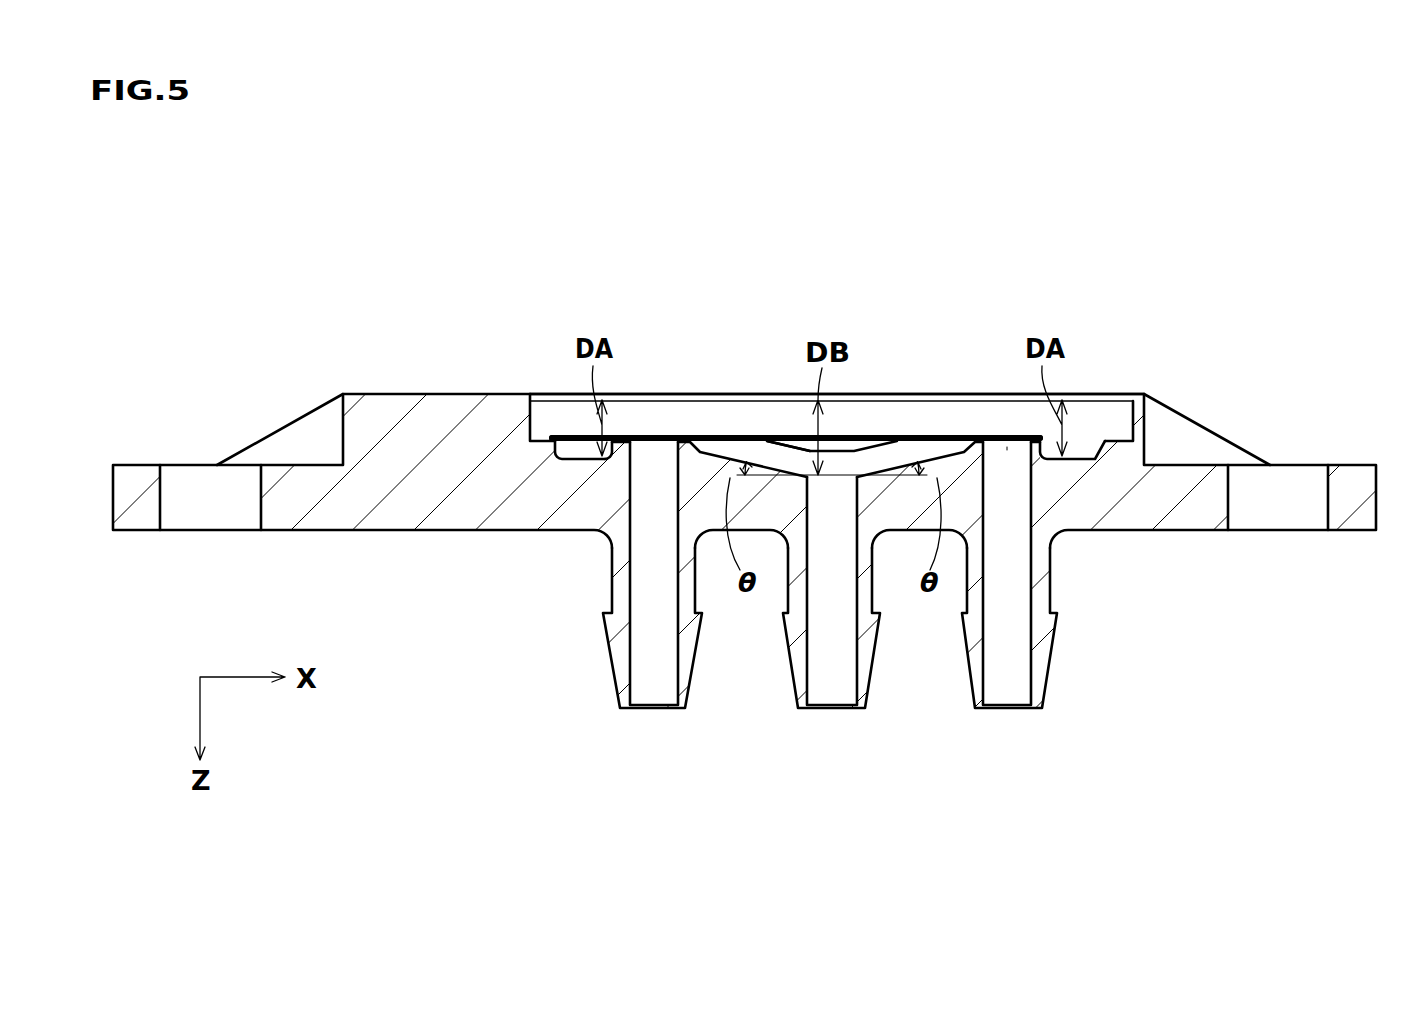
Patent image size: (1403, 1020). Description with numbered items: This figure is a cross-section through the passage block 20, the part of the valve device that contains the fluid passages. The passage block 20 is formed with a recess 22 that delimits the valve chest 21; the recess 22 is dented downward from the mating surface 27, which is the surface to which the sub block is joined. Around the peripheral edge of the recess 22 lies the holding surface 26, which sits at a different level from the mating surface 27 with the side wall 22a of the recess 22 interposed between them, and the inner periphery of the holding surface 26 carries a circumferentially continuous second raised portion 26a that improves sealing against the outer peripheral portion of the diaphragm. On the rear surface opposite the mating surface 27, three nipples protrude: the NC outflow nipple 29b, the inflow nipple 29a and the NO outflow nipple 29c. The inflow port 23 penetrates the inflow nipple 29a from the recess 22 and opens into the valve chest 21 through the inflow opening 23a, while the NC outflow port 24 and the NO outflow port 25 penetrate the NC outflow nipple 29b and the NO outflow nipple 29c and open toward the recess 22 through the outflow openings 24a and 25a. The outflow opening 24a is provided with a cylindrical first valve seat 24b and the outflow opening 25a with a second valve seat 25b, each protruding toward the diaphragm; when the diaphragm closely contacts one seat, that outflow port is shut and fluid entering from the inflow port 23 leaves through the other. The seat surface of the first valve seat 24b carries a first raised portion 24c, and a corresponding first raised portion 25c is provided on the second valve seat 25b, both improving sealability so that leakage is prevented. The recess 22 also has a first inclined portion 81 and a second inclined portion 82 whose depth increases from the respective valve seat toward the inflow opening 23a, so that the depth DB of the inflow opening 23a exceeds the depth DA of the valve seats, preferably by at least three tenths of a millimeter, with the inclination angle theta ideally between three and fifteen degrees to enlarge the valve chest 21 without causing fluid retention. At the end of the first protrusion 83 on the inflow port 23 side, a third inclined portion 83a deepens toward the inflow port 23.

The passage block 20 is at (1196, 348).
The valve chest 21 is at (946, 400).
The recess 22 is at (1080, 405).
The side wall 22a is at (565, 395).
The inflow port 23 is at (840, 679).
The inflow opening 23a is at (858, 446).
The NC outflow port 24 is at (660, 679).
The outflow opening 24a is at (655, 436).
The first valve seat 24b is at (588, 462).
The first raised portion 24c is at (620, 441).
The NO outflow port 25 is at (1019, 679).
The outflow opening 25a is at (1007, 447).
The second valve seat 25b is at (1042, 460).
The first raised portion 25c is at (986, 440).
The holding surface 26 is at (538, 395).
The second raised portion 26a is at (1116, 396).
The mating surface 27 is at (385, 394).
The inflow nipple 29a is at (797, 660).
The NC outflow nipple 29b is at (623, 643).
The NO outflow nipple 29c is at (1040, 658).
The first inclined portion 81 is at (733, 436).
The second inclined portion 82 is at (915, 440).
The first protrusion 83 is at (835, 448).
The third inclined portion 83a is at (790, 440).